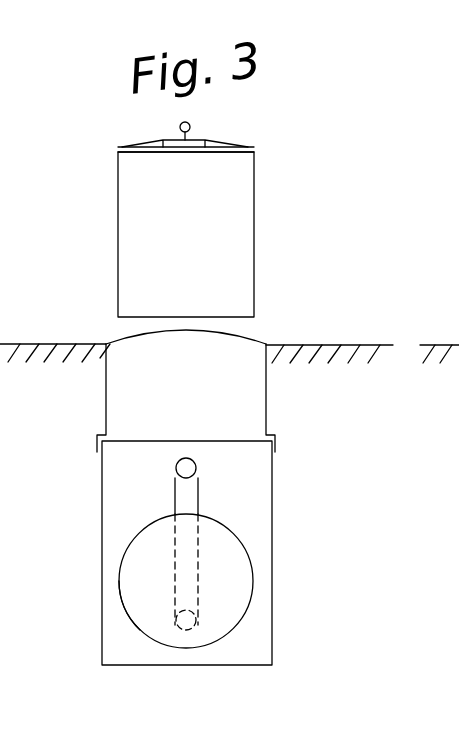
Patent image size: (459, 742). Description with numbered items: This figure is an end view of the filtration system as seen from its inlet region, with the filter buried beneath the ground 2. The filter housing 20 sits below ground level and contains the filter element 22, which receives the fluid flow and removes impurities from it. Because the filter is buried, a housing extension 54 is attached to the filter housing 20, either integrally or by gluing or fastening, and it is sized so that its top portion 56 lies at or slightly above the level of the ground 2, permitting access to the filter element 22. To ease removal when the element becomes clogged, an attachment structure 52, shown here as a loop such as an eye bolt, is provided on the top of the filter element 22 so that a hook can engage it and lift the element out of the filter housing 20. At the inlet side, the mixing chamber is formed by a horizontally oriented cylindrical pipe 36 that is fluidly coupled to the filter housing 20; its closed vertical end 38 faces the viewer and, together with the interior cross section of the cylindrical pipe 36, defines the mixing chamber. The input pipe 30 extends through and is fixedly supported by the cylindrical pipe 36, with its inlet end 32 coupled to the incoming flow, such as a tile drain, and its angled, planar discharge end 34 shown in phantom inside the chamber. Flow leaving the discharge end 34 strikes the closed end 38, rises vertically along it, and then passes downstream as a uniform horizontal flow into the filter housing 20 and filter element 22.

The ground 2 is at (347, 345).
The filter housing 20 is at (257, 622).
The filter element 22 is at (245, 218).
The input pipe 30 is at (175, 491).
The inlet end 32 is at (192, 465).
The discharge end 34 is at (192, 628).
The cylindrical pipe 36 is at (231, 528).
The closed vertical end 38 is at (140, 586).
The attachment structure 52 is at (190, 124).
The housing extension 54 is at (266, 388).
The top portion 56 is at (228, 337).